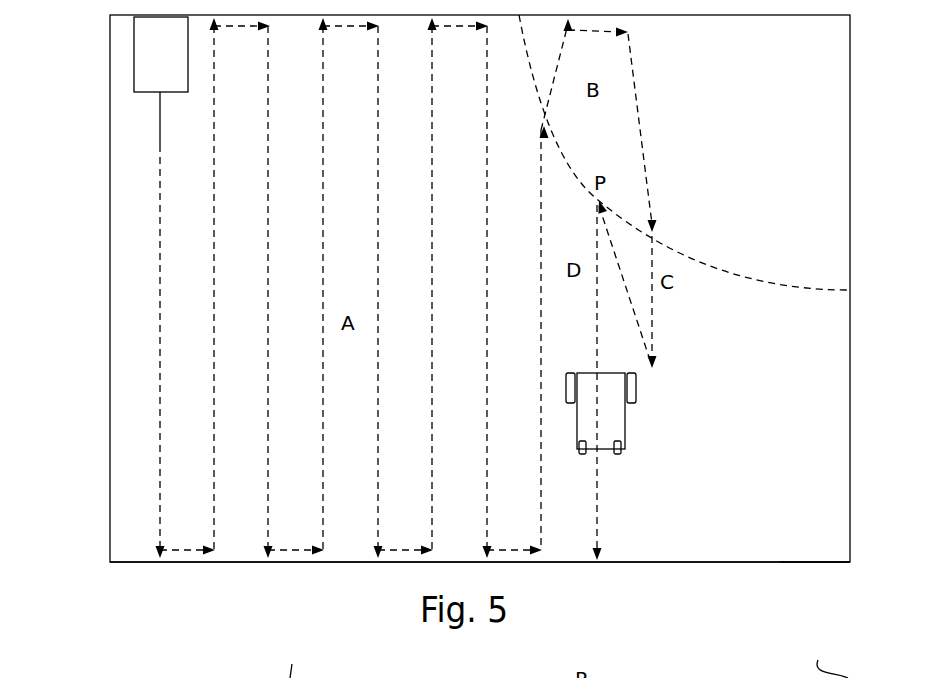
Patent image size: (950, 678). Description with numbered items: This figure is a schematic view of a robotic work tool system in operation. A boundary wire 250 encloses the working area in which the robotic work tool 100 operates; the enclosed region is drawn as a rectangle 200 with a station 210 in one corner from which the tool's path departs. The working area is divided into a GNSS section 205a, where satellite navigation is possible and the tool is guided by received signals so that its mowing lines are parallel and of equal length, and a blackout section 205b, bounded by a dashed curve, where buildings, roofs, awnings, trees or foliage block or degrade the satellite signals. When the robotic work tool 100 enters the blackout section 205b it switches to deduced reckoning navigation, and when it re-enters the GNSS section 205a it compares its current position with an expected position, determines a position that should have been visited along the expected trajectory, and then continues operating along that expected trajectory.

The robotic work tool 100 is at (625, 418).
The work area 200 is at (112, 358).
The GNSS section 205a is at (338, 560).
The blackout section 205b is at (843, 238).
The charging station 210 is at (140, 41).
The boundary wire 250 is at (795, 564).